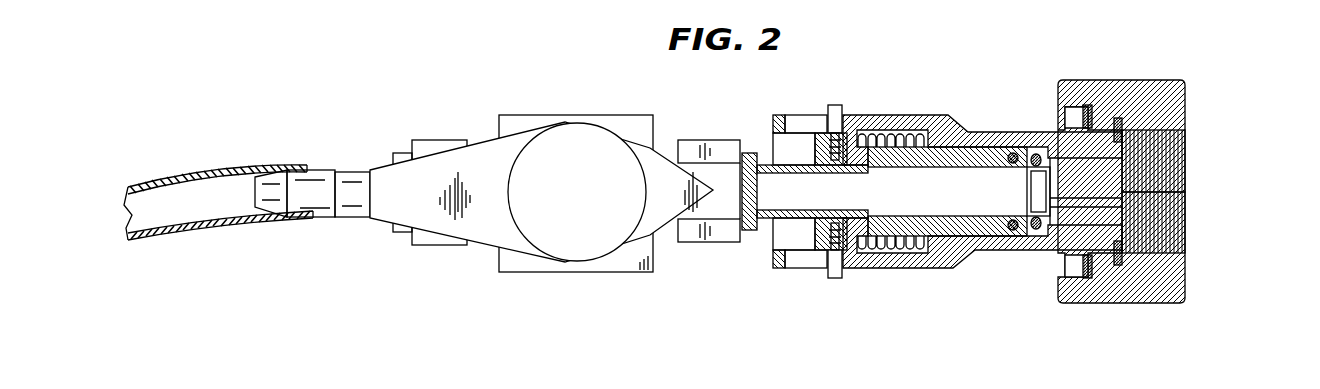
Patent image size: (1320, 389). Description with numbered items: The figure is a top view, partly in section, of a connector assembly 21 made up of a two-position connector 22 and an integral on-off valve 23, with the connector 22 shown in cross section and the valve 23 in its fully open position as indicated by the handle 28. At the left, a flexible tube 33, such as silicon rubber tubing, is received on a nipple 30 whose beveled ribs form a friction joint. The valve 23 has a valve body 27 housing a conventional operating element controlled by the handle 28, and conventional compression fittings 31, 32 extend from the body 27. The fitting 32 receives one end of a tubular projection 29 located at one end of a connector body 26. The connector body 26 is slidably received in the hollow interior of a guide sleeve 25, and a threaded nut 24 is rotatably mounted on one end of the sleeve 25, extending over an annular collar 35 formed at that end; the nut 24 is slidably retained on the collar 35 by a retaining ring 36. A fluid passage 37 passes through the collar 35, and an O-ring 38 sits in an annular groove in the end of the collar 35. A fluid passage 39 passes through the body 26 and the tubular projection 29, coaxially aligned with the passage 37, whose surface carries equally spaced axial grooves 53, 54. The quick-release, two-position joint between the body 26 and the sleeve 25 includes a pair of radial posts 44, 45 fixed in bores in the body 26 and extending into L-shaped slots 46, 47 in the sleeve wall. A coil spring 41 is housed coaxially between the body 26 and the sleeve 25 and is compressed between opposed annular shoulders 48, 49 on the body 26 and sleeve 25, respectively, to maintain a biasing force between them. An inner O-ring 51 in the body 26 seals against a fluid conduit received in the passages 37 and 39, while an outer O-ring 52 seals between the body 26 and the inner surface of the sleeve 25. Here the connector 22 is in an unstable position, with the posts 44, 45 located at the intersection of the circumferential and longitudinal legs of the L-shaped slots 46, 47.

The connector assembly 21 is at (830, 89).
The two-position connector 22 is at (955, 296).
The on-off valve 23 is at (578, 288).
The threaded nut 24 is at (1160, 80).
The guide sleeve 25 is at (948, 118).
The connector body 26 is at (760, 228).
The valve body 27 is at (513, 115).
The handle 28 is at (468, 145).
The tubular projection 29 is at (749, 152).
The nipple 30 is at (347, 172).
The compression fitting 31 is at (425, 145).
The compression fitting 32 is at (688, 140).
The flexible tube 33 is at (201, 184).
The annular collar 35 is at (1110, 106).
The retaining ring 36 is at (1064, 110).
The fluid passage 37 is at (1102, 175).
The O-ring 38 is at (1172, 250).
The fluid passage 39 is at (903, 193).
The coil spring 41 is at (898, 132).
The radial post 44 is at (831, 118).
The radial post 45 is at (836, 265).
The L-shaped slot 46 is at (793, 120).
The L-shaped slot 47 is at (806, 263).
The annular shoulder 48 is at (880, 131).
The annular shoulder 49 is at (922, 131).
The inner O-ring 51 is at (1037, 188).
The outer O-ring 52 is at (1014, 232).
The groove 53 is at (1095, 201).
The groove 54 is at (1058, 160).